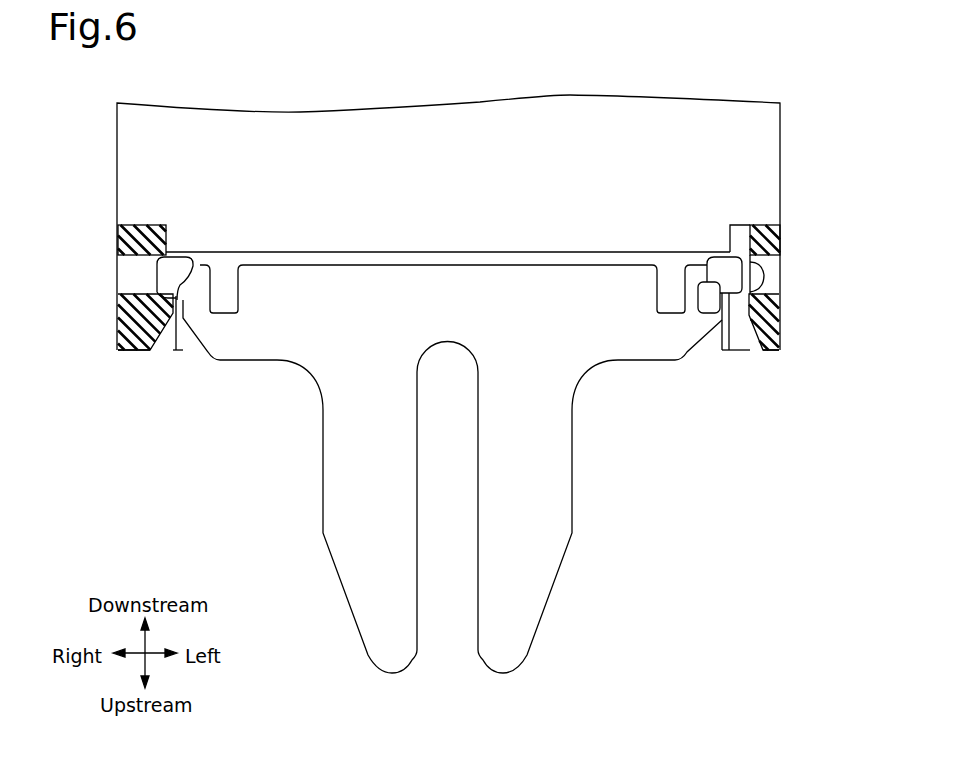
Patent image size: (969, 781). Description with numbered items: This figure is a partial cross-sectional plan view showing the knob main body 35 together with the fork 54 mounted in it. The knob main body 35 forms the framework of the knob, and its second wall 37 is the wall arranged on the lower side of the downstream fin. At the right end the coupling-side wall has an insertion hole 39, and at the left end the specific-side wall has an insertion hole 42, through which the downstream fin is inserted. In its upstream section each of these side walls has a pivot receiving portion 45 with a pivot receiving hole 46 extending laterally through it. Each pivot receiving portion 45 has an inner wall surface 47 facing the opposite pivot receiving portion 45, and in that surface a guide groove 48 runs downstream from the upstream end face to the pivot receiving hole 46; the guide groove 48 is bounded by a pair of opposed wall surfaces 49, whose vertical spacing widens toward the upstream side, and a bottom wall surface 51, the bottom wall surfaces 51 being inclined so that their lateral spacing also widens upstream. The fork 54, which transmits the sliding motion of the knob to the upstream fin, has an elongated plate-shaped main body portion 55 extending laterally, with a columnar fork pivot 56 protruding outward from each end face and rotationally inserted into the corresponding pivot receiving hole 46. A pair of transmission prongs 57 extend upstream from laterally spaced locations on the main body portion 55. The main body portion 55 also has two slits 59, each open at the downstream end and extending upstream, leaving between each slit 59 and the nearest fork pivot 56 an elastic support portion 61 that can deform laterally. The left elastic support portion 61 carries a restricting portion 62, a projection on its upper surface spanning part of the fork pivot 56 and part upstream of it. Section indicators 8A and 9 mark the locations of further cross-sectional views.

The second wall 37 is at (418, 112).
The knob main body 35 is at (448, 208).
The insertion hole 39 is at (136, 225).
The insertion hole 42 is at (767, 223).
The pivot receiving hole 46 is at (134, 288).
The pivot receiving portion 45 is at (129, 341).
The fork pivot 56 is at (180, 260).
The main body portion 55 is at (388, 275).
The slit 59 is at (230, 303).
The restricting portion 62 is at (710, 287).
The elastic support portion 61 is at (200, 332).
The inner wall surface 47 is at (175, 327).
The opposed wall surfaces 49 is at (172, 323).
The bottom wall surface 51 is at (167, 343).
The guide groove 48 is at (468, 385).
The fork 54 is at (570, 672).
The transmission prong 57 is at (502, 656).
The section line 8A is at (83, 273).
The section line 9 is at (55, 297).